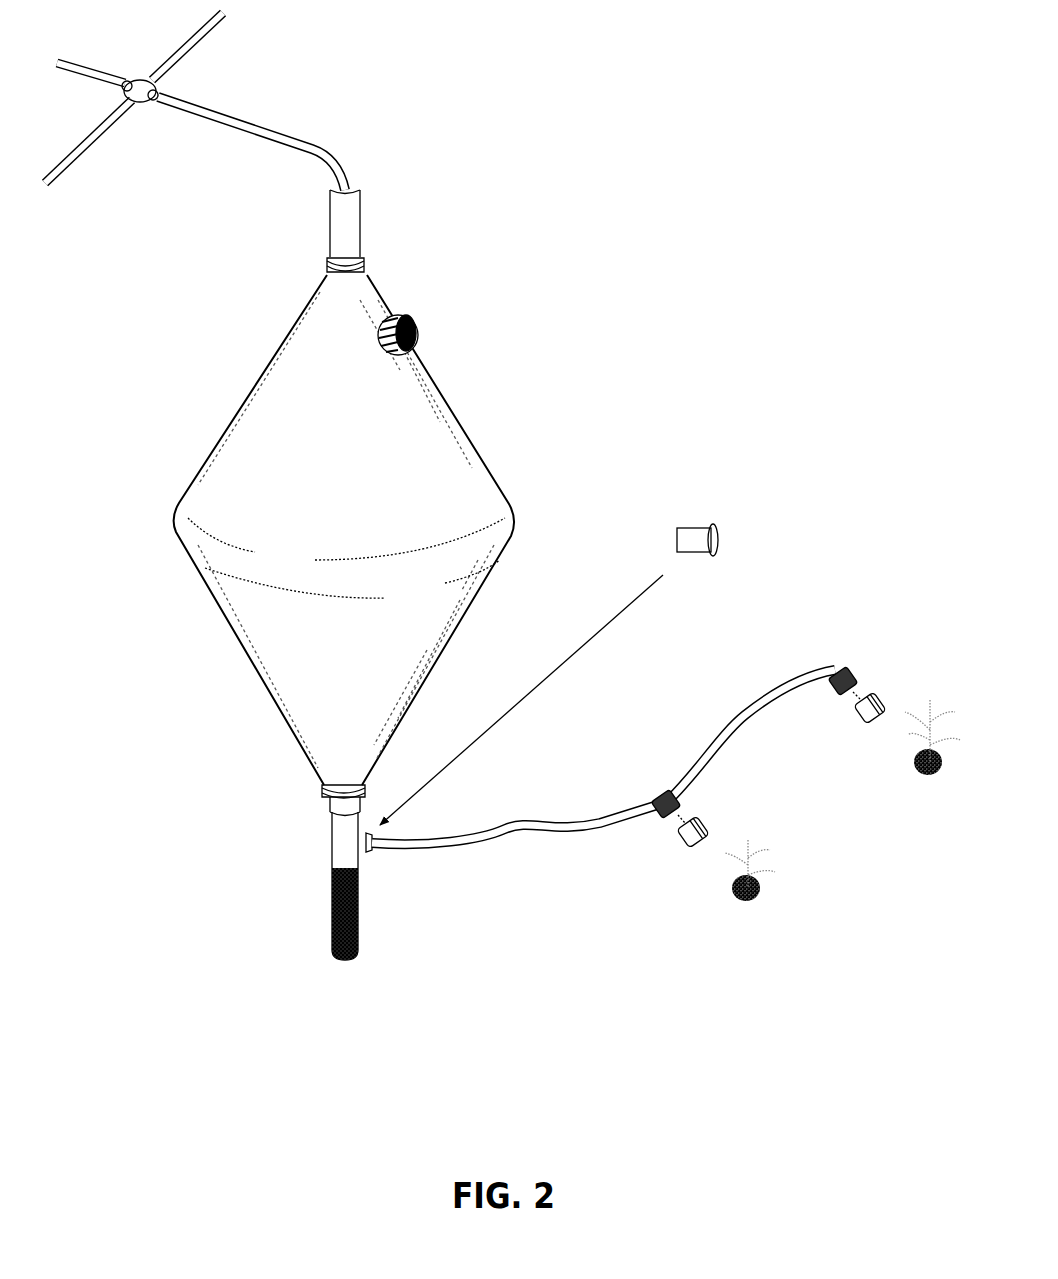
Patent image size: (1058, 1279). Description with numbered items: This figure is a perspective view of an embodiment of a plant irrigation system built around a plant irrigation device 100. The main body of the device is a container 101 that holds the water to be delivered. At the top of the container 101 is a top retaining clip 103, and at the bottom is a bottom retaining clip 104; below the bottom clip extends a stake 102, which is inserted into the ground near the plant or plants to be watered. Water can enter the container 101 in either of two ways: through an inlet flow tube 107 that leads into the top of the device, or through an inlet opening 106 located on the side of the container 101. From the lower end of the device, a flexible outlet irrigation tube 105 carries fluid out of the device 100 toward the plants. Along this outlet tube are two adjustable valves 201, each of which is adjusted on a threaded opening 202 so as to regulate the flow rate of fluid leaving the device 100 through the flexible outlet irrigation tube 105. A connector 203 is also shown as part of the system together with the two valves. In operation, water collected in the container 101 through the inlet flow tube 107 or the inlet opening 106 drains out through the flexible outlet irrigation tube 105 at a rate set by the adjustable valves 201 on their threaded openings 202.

The plant irrigation device 100 is at (230, 363).
The container 101 is at (260, 442).
The stake 102 is at (332, 895).
The top retaining clip 103 is at (315, 257).
The bottom retaining clip 104 is at (317, 788).
The flexible outlet irrigation tube 105 is at (478, 842).
The inlet opening 106 is at (443, 329).
The inlet flow tube 107 is at (358, 158).
The adjustable valve 201 is at (853, 727).
The threaded opening 202 is at (690, 797).
The connector 203 is at (737, 539).